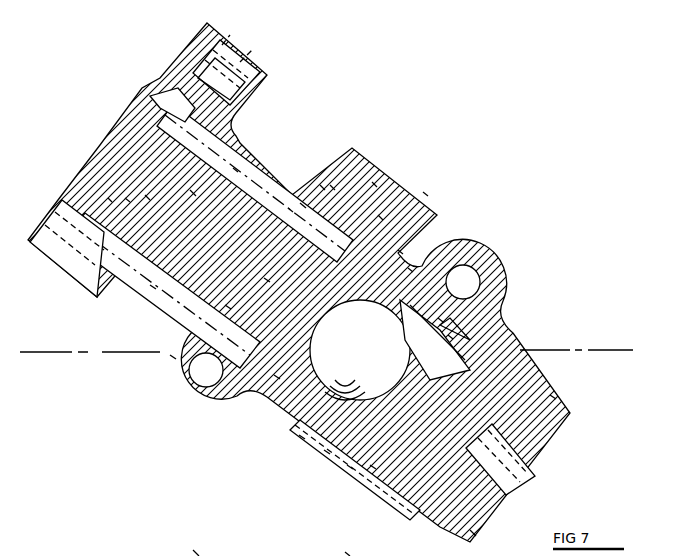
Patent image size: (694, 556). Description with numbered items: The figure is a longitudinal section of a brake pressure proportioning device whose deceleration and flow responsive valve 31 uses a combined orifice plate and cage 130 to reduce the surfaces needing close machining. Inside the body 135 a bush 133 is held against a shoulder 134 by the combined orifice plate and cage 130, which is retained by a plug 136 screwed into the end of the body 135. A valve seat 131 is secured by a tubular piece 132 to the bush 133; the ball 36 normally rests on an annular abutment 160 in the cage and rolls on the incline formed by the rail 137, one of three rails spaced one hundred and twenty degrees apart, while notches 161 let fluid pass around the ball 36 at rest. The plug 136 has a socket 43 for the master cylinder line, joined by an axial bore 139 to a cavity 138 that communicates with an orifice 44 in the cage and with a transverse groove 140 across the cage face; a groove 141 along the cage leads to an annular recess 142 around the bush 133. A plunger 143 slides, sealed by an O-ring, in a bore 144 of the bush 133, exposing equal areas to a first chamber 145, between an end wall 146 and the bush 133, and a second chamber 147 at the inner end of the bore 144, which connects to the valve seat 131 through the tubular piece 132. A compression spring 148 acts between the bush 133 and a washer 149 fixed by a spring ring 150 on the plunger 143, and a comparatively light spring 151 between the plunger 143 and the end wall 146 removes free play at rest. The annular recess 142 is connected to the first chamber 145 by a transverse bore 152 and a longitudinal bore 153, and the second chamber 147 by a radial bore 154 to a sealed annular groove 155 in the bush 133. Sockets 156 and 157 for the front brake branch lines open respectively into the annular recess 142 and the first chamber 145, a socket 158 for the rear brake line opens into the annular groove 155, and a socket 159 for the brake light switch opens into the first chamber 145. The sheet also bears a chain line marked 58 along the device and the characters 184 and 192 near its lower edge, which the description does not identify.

The socket 157 is at (217, 65).
The end wall 146 is at (152, 138).
The comparatively light spring 151 is at (145, 195).
The spring ring 150 is at (147, 200).
The washer 149 is at (127, 200).
The first chamber 145 is at (110, 200).
The body 135 is at (193, 193).
The plunger 143 is at (235, 170).
The longitudinal bore 153 is at (290, 210).
The shoulder 134 is at (302, 205).
The bore 144 is at (322, 188).
The socket 158 is at (332, 188).
The annular groove 155 is at (373, 183).
The transverse bore 152 is at (380, 217).
The socket 156 is at (425, 193).
The annular recess 142 is at (400, 250).
The valve seat 131 is at (410, 270).
The combined orifice plate and cage 130 is at (433, 277).
The notches 161 is at (440, 320).
The transverse groove 140 is at (450, 337).
The plug 136 is at (480, 363).
The axis 58 is at (633, 350).
The cavity 138 is at (553, 397).
The socket 43 is at (503, 470).
The axial bore 139 is at (473, 533).
The orifice 44 is at (403, 487).
The rail 137 is at (373, 467).
The ball 36 is at (350, 467).
The groove 141 is at (327, 452).
The deceleration and flow responsive valve 31 is at (302, 437).
The tubular piece 132 is at (277, 377).
The second chamber 147 is at (267, 280).
The radial bore 154 is at (173, 357).
The bush 133 is at (228, 307).
The compression spring 148 is at (153, 287).
The socket 159 is at (62, 262).
The annular abutment 160 is at (372, 385).
The lever 184 is at (204, 555).
The link 192 is at (355, 552).